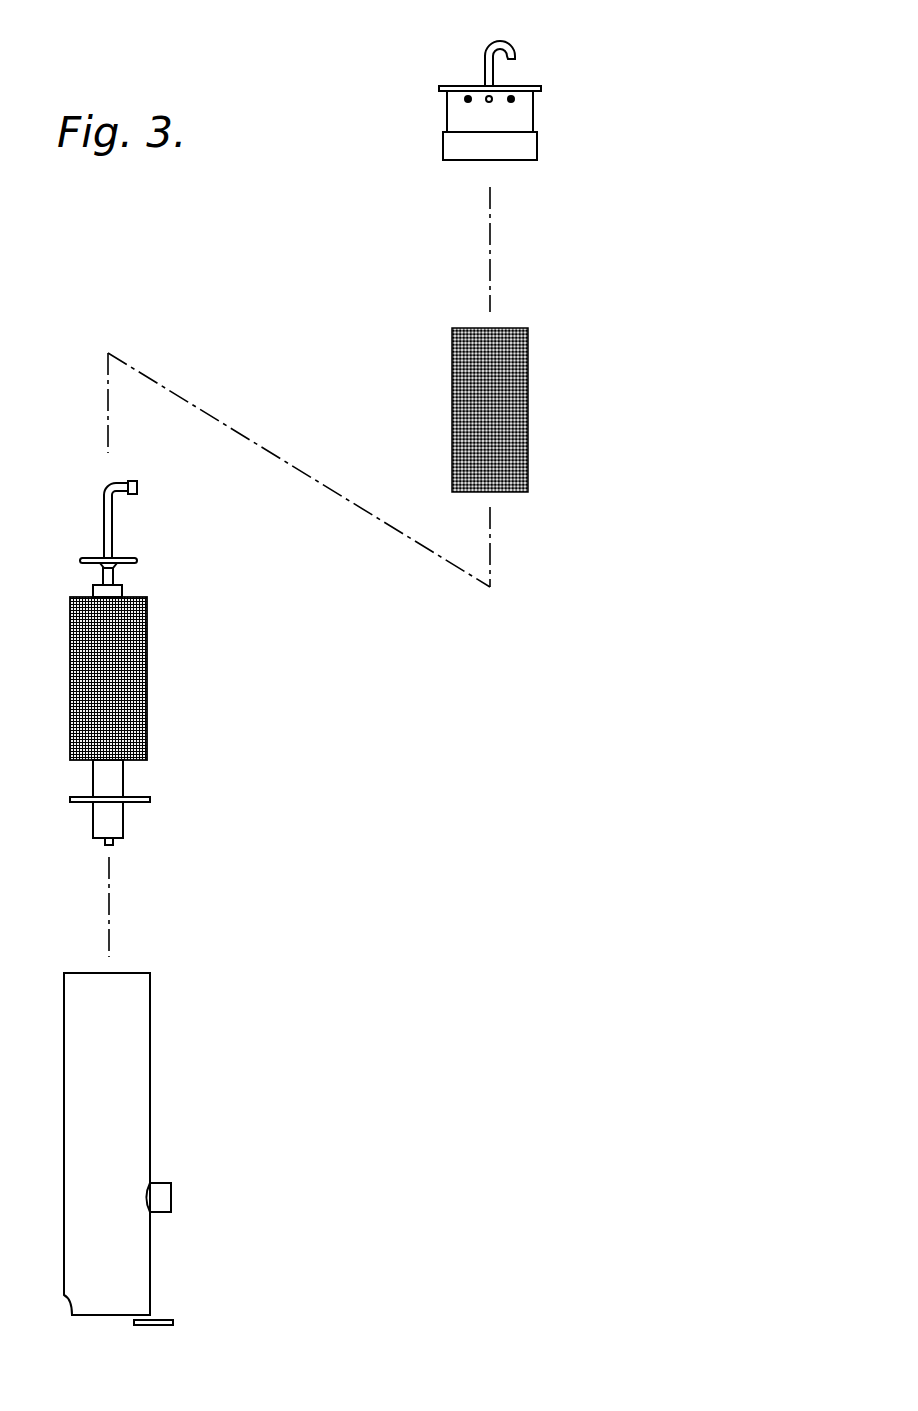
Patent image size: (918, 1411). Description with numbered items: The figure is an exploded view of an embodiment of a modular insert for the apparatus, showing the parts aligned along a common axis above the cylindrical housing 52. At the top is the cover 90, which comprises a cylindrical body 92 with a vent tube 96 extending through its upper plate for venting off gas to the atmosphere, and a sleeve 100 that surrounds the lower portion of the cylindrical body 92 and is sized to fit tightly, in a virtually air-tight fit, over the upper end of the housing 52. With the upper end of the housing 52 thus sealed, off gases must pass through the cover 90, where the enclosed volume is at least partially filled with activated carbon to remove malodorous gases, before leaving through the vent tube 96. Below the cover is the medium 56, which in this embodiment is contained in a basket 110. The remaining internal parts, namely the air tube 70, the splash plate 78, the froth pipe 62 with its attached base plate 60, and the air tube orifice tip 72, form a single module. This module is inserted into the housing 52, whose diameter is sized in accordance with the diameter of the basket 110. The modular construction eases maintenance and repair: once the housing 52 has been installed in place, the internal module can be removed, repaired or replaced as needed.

The housing 52 is at (151, 1071).
The medium 56 is at (525, 450).
The base plate 60 is at (132, 798).
The froth pipe 62 is at (123, 818).
The air tube 70 is at (122, 482).
The air tube orifice tip 72 is at (113, 842).
The splash plate 78 is at (130, 556).
The cover 90 is at (410, 116).
The cylindrical body 92 is at (533, 117).
The vent tube 96 is at (509, 44).
The sleeve 100 is at (537, 152).
The basket 110 is at (147, 683).